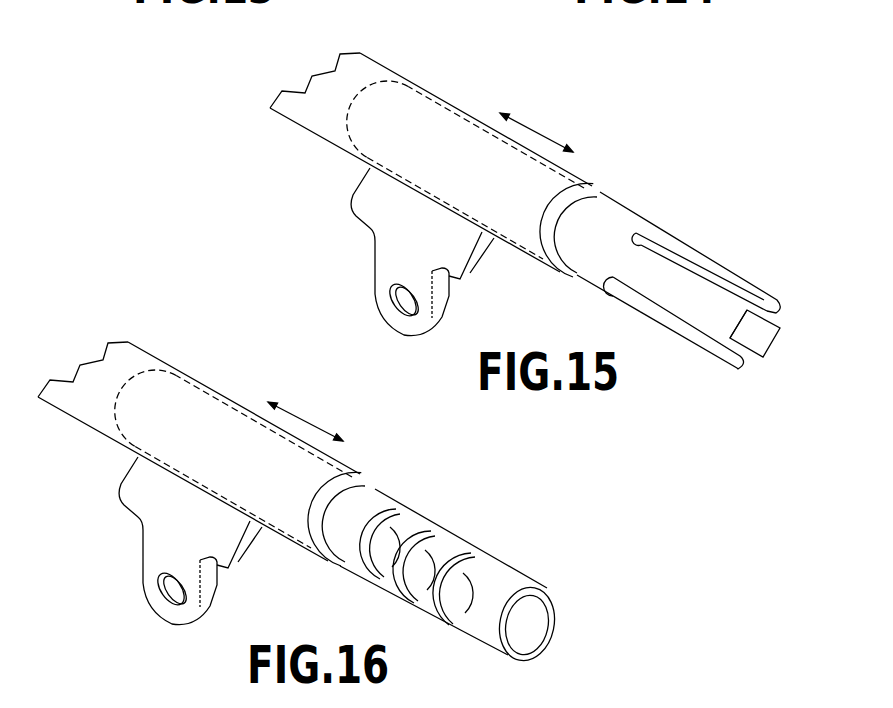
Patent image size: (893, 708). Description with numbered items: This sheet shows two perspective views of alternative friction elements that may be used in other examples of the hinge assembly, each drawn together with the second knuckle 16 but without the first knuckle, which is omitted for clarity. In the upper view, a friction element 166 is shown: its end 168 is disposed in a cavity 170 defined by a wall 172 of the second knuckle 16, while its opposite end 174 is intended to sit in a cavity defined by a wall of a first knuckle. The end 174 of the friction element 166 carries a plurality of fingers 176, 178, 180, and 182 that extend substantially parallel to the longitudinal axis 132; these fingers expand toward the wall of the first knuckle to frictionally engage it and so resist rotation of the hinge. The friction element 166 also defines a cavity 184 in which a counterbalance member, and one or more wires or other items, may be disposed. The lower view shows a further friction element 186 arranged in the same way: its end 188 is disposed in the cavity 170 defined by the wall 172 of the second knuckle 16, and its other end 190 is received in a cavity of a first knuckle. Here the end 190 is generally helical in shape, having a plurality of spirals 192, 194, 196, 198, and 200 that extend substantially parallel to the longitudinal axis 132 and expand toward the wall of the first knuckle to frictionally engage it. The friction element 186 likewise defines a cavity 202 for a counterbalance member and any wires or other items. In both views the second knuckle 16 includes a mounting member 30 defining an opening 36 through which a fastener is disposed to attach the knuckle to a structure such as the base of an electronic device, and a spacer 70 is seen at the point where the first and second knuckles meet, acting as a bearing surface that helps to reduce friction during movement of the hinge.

In FIG. 16, the second knuckle 16 is at (160, 360).
In FIG. 15, the second knuckle 16 is at (394, 66).
In FIG. 16, the mounting member 30 is at (146, 554).
In FIG. 15, the mounting member 30 is at (377, 263).
In FIG. 16, the opening 36 is at (168, 590).
In FIG. 15, the opening 36 is at (398, 302).
In FIG. 16, the spacer 70 is at (362, 487).
In FIG. 15, the spacer 70 is at (598, 196).
In FIG. 16, the longitudinal axis 132 is at (310, 420).
In FIG. 15, the longitudinal axis 132 is at (545, 130).
In FIG. 15, the friction element 166 is at (638, 213).
In FIG. 15, the end 168 is at (425, 100).
In FIG. 16, the cavity 170 is at (103, 408).
In FIG. 15, the cavity 170 is at (338, 118).
In FIG. 16, the wall 172 is at (76, 372).
In FIG. 15, the wall 172 is at (308, 88).
In FIG. 15, the end 174 is at (588, 257).
In FIG. 15, the finger 176 is at (768, 340).
In FIG. 15, the finger 178 is at (735, 370).
In FIG. 15, the finger 180 is at (698, 312).
In FIG. 15, the finger 182 is at (740, 272).
In FIG. 15, the cavity 184 is at (683, 265).
In FIG. 16, the friction element 186 is at (390, 496).
In FIG. 16, the end 188 is at (195, 388).
In FIG. 16, the end 190 is at (343, 517).
In FIG. 16, the spiral 192 is at (352, 568).
In FIG. 16, the spiral 194 is at (415, 520).
In FIG. 16, the spiral 196 is at (450, 545).
In FIG. 16, the spiral 198 is at (488, 560).
In FIG. 16, the spiral 200 is at (522, 583).
In FIG. 16, the cavity 202 is at (527, 622).